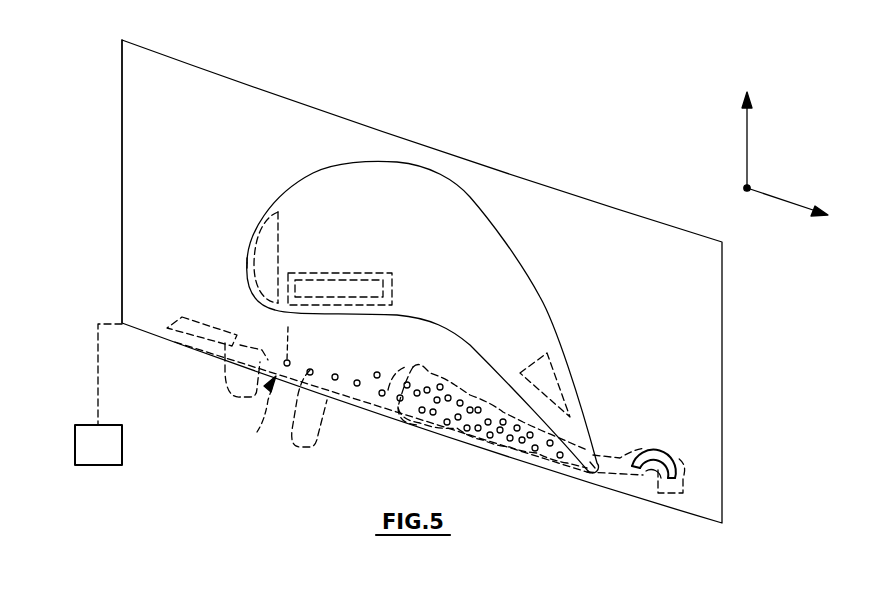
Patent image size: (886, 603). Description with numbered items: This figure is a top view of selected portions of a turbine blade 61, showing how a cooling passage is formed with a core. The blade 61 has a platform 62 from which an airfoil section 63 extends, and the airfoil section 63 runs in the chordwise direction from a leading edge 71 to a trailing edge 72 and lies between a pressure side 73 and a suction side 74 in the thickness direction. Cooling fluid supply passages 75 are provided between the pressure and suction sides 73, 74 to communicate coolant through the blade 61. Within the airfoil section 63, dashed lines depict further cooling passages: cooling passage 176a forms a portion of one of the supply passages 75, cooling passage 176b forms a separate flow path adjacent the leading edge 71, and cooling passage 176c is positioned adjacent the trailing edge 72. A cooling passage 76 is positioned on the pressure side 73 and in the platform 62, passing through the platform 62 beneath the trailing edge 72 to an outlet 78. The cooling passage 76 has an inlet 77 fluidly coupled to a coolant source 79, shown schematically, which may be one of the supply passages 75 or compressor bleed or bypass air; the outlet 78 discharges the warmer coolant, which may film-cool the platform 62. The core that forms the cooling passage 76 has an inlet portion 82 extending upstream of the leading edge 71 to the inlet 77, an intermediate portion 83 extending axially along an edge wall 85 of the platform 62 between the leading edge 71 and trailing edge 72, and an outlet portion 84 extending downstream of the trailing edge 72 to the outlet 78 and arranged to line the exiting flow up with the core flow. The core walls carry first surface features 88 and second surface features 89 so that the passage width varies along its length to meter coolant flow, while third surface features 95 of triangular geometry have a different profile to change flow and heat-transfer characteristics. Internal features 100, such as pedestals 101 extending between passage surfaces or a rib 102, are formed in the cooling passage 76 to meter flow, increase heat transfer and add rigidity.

The blade 61 is at (638, 175).
The platform 62 is at (135, 151).
The airfoil section 63 is at (383, 308).
The leading edge 71 is at (250, 270).
The trailing edge 72 is at (593, 470).
The pressure side 73 is at (393, 318).
The suction side 74 is at (370, 160).
The cooling fluid supply passage 75 is at (307, 273).
The cooling passage 76 is at (257, 432).
The inlet 77 is at (165, 333).
The outlet 78 is at (683, 497).
The coolant source 79 is at (75, 445).
The inlet portion 82 is at (220, 330).
The intermediate portion 83 is at (352, 360).
The outlet portion 84 is at (662, 451).
The edge wall 85 is at (222, 77).
The first surface feature 88 is at (353, 420).
The second surface feature 89 is at (428, 440).
The third surface feature 95 is at (232, 405).
The internal feature 100 is at (293, 447).
The pedestal 101 is at (288, 332).
The rib 102 is at (675, 467).
The cooling passage 176a is at (372, 277).
The cooling passage 176b is at (267, 237).
The cooling passage 176c is at (558, 390).